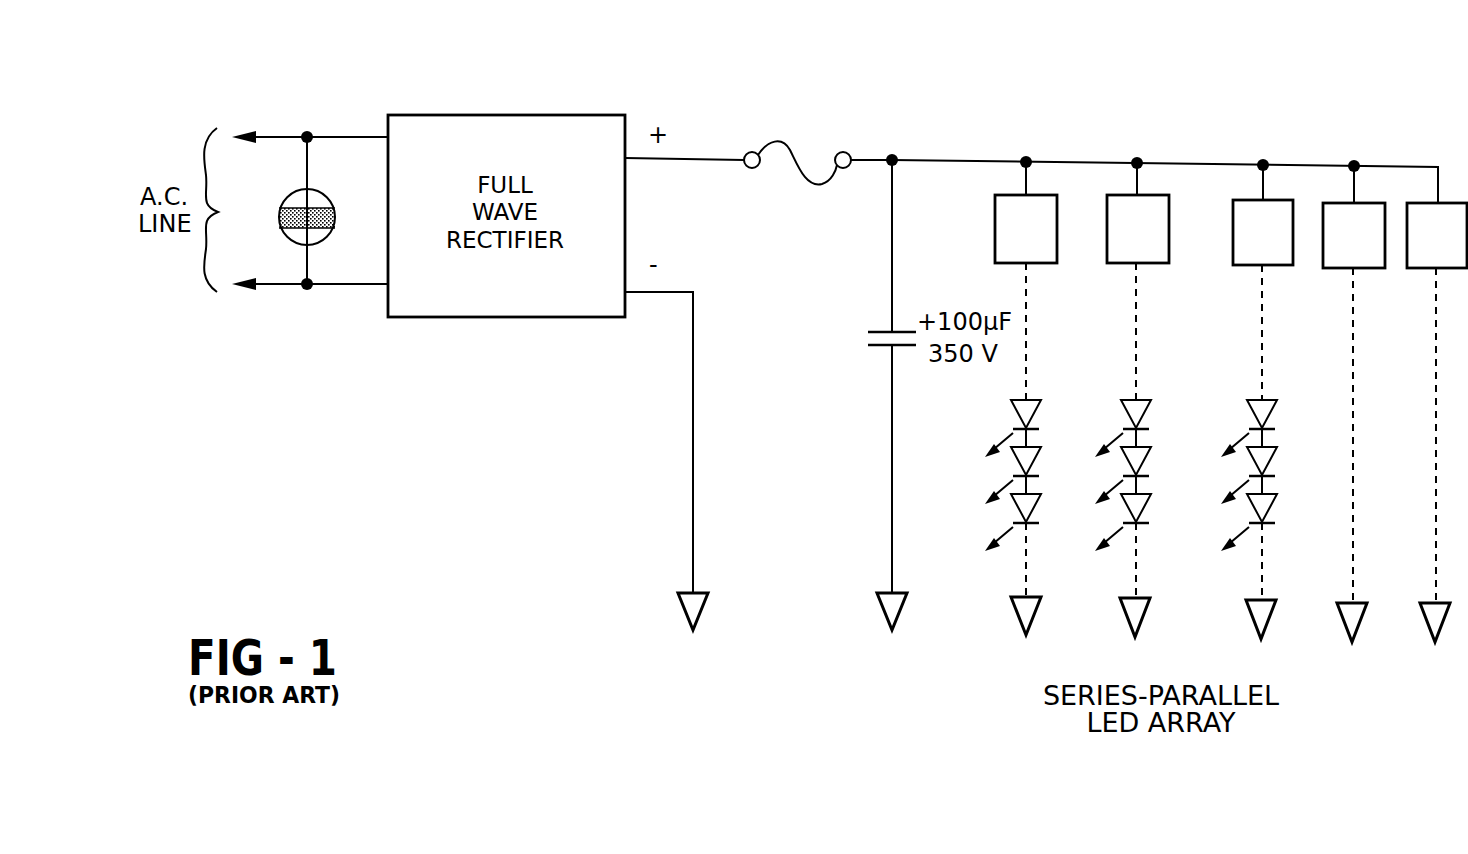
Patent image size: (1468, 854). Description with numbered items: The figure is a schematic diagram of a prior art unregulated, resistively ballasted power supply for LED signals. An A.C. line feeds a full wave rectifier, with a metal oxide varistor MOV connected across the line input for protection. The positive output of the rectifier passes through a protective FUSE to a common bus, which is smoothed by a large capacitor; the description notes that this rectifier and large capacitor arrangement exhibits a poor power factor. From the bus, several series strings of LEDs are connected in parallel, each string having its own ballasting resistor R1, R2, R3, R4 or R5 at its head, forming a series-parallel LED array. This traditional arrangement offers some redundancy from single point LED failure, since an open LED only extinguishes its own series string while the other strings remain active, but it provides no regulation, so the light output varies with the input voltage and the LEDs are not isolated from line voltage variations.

The metal oxide varistor MOV is at (330, 240).
The fuse FUSE is at (790, 150).
The resistor R1 is at (1026, 212).
The resistor R2 is at (1138, 213).
The resistor R3 is at (1263, 215).
The resistor R4 is at (1354, 217).
The resistor R5 is at (1437, 235).